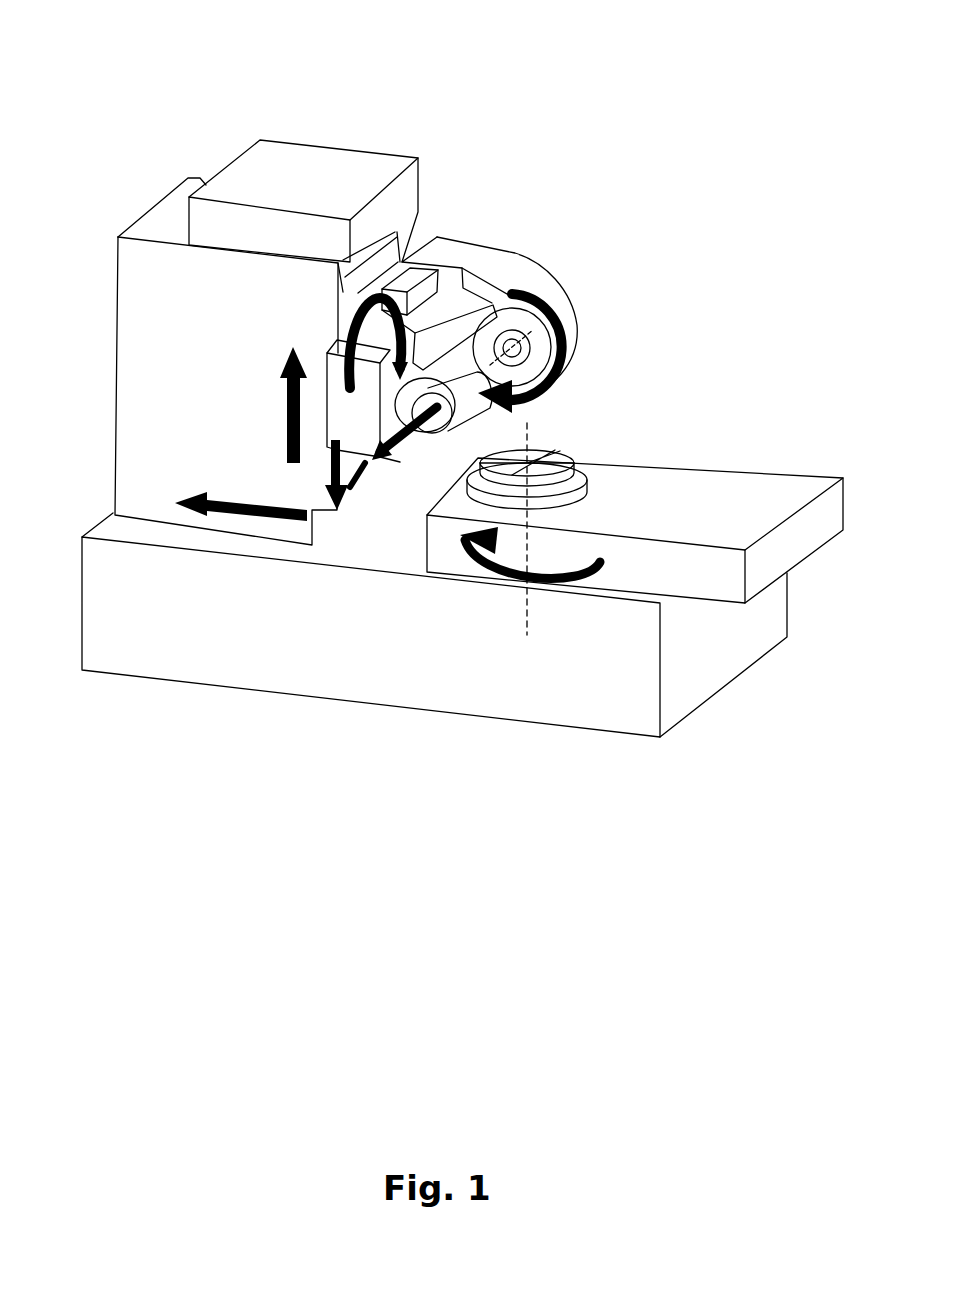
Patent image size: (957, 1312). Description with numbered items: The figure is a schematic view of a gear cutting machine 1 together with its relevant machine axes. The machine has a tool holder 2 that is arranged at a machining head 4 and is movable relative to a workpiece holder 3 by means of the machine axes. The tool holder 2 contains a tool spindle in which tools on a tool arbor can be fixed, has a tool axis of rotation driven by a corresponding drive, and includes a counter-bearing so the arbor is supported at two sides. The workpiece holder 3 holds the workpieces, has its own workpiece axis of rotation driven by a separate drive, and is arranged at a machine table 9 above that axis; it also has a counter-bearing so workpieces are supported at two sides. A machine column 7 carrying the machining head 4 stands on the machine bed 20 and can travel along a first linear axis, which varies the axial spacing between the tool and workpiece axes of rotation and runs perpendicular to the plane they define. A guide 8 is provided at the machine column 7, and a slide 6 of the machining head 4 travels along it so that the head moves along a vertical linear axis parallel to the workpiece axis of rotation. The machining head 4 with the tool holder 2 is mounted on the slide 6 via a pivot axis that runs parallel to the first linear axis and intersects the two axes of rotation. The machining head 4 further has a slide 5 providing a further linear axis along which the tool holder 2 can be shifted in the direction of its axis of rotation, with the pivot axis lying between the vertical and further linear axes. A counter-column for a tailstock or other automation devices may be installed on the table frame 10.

The gear cutting machine 1 is at (250, 667).
The tool holder 2 is at (515, 345).
The workpiece holder 3 is at (548, 462).
The machining head 4 is at (467, 318).
The slide 5 is at (467, 320).
The slide 6 is at (362, 415).
The machine column 7 is at (148, 282).
The guide 8 is at (354, 298).
The machine table 9 is at (603, 482).
The table frame 10 is at (728, 488).
The machine bed 20 is at (478, 647).